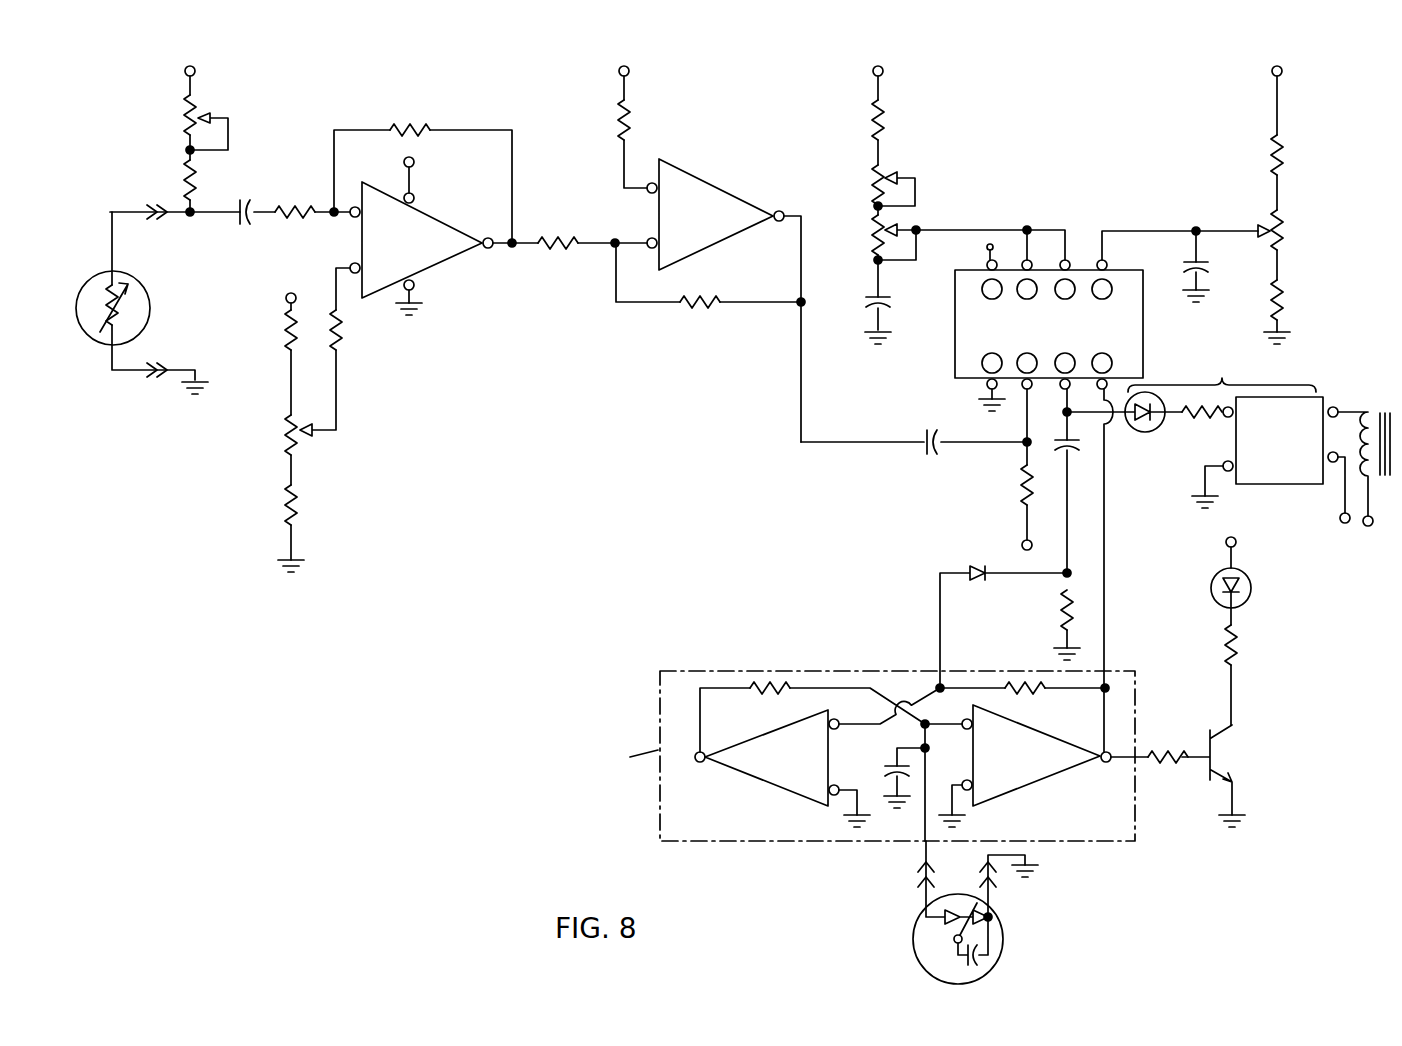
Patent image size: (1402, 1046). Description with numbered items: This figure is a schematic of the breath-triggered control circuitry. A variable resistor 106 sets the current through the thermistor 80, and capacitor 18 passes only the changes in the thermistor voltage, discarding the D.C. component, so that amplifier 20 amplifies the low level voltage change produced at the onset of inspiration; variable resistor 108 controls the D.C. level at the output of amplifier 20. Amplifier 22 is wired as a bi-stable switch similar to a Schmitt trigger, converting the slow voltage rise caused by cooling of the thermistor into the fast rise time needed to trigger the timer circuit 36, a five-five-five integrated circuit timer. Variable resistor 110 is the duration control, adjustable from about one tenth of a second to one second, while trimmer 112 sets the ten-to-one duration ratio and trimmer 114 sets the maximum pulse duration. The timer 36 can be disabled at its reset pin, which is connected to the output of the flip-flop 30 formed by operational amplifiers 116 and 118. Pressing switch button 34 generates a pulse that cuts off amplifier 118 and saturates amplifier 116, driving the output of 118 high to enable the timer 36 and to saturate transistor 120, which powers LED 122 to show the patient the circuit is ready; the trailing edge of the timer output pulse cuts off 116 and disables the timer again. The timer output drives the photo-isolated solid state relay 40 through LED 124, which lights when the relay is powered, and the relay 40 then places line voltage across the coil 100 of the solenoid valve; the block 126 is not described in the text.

The capacitor 18 is at (248, 197).
The amplifier 20 is at (461, 273).
The amplifier 22 is at (736, 188).
The flip-flop 30 is at (658, 690).
The switch button 34 is at (1003, 930).
The timer circuit 36 is at (955, 350).
The photo-isolated solid state relay 40 is at (1222, 375).
The thermistor 80 is at (147, 325).
The coil 100 is at (1363, 425).
The variable resistor 106 is at (180, 125).
The variable resistor 108 is at (312, 433).
The variable resistor 110 is at (876, 230).
The calibration adjustment trimmer 112 is at (918, 192).
The calibration adjustment trimmer 114 is at (1262, 228).
The operational amplifier 116 is at (750, 778).
The operational amplifier 118 is at (1063, 780).
The transistor 120 is at (1244, 733).
The LED 122 is at (1250, 597).
The LED 124 is at (1140, 432).
The relay driver 126 is at (1280, 486).